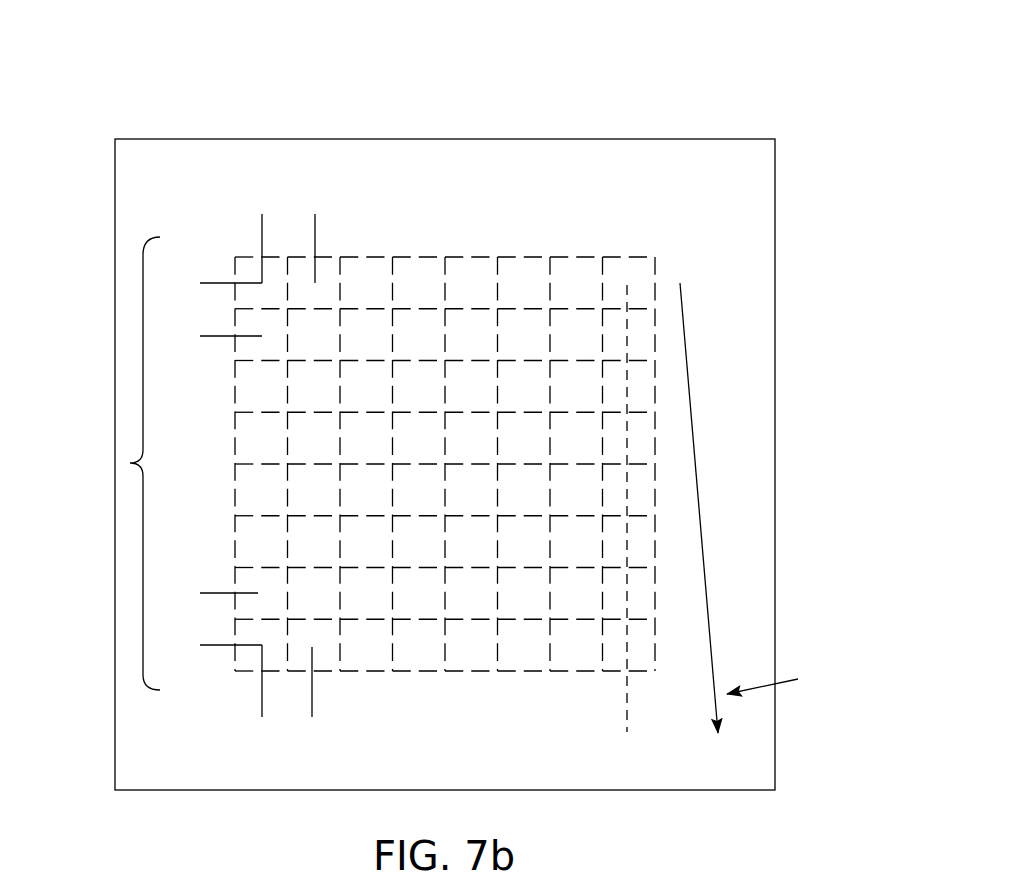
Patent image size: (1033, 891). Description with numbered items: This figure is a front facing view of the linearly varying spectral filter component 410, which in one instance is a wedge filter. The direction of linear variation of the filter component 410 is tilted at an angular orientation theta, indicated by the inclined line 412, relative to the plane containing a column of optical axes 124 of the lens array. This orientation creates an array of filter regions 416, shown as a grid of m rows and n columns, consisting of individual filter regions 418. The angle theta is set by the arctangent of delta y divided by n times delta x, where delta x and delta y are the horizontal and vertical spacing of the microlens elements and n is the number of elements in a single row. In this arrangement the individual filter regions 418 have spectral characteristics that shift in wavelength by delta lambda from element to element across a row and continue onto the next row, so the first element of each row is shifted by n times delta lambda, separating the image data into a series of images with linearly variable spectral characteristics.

The linearly varying spectral filter component 410 is at (178, 78).
The scan direction at angle theta 412 is at (752, 527).
The array of filter regions 416 is at (132, 465).
The individual filter regions 418 is at (575, 282).
The optical axes 124 is at (572, 694).